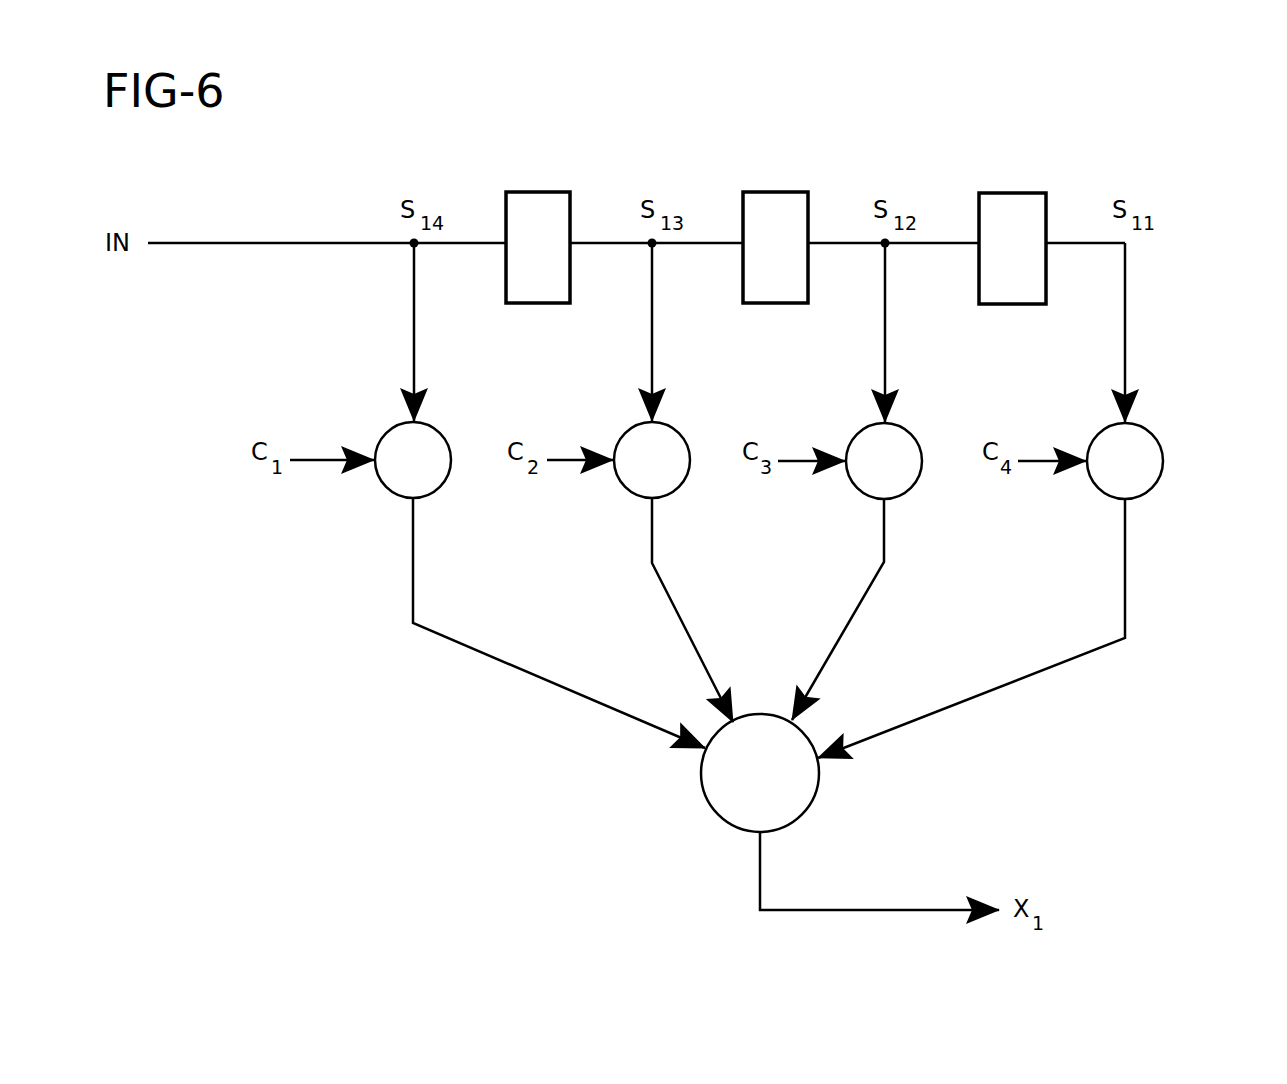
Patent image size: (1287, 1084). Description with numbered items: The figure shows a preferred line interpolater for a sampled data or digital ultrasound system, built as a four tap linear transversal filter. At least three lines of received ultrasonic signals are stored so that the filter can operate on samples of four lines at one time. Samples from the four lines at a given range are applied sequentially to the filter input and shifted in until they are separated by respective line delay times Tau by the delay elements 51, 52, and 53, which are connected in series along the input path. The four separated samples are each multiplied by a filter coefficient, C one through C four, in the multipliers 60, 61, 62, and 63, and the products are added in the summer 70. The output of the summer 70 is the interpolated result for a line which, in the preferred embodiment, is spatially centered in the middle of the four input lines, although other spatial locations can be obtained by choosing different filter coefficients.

The delay element 51 is at (537, 192).
The delay element 52 is at (778, 192).
The delay element 53 is at (1016, 193).
The multiplier 60 is at (438, 427).
The multiplier 61 is at (677, 428).
The multiplier 62 is at (908, 432).
The multiplier 63 is at (1160, 440).
The summer 70 is at (703, 798).